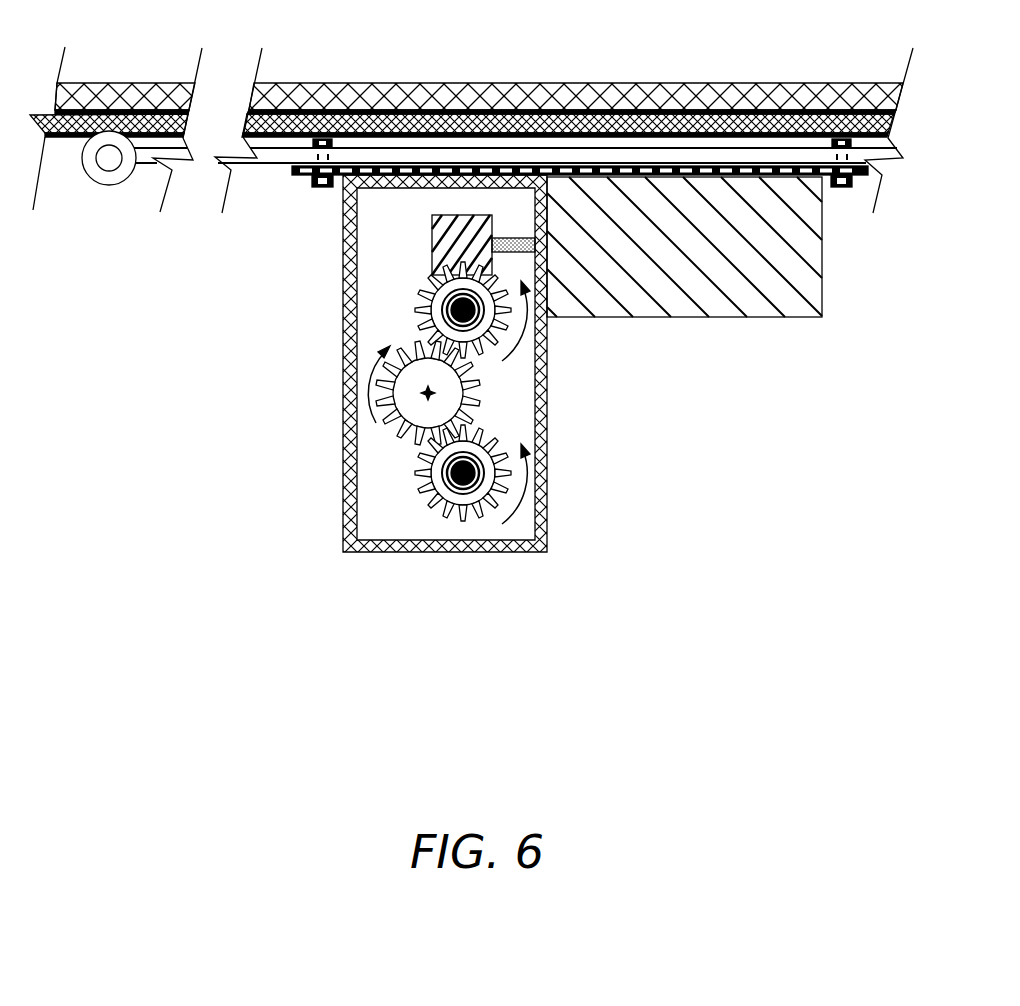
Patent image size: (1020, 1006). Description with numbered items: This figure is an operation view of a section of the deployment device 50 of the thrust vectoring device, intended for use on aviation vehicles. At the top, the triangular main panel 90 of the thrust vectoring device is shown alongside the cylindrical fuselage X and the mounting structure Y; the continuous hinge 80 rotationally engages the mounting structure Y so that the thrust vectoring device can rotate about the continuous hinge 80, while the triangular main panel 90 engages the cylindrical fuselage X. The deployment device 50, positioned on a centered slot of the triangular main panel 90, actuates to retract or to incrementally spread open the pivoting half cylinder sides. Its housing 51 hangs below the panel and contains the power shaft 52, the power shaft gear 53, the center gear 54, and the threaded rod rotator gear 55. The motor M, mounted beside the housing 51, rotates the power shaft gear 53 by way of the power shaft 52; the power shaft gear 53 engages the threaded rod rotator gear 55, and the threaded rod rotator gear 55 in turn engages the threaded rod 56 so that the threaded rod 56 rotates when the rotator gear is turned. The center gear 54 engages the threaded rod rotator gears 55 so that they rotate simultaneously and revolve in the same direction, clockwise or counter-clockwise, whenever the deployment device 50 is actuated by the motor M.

The cylindrical fuselage X is at (127, 83).
The mounting structure Y is at (303, 95).
The triangular main panel 90 is at (368, 158).
The continuous hinge 80 is at (102, 183).
The deployment device 50 is at (467, 304).
The housing 51 is at (343, 342).
The power shaft 52 is at (514, 238).
The power shaft gear 53 is at (462, 215).
The center gear 54 is at (402, 425).
The threaded rod rotator gear 55 is at (498, 362).
The threaded rod 56 is at (473, 458).
The motor M is at (683, 233).